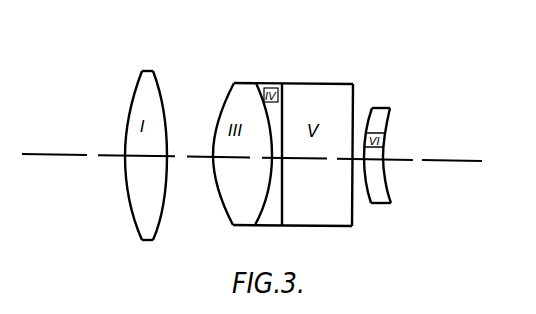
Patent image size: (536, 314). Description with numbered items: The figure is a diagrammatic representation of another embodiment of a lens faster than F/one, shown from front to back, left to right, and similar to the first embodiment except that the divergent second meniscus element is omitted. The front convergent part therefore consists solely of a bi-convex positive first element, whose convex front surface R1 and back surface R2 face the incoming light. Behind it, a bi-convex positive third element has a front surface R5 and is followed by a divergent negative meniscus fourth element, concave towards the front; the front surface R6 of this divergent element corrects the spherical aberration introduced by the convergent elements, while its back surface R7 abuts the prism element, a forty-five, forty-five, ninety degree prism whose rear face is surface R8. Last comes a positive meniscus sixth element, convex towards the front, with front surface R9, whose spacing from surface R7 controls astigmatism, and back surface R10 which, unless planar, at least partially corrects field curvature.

The front surface of element I R1 is at (140, 82).
The back surface of element I R2 is at (155, 82).
The front surface of element III R5 is at (224, 96).
The front surface of element IV R6 is at (260, 83).
The back surface of element IV R7 is at (282, 226).
The back surface of prism element V R8 is at (352, 227).
The front surface of element VI R9 is at (370, 108).
The back surface of element VI R10 is at (391, 117).